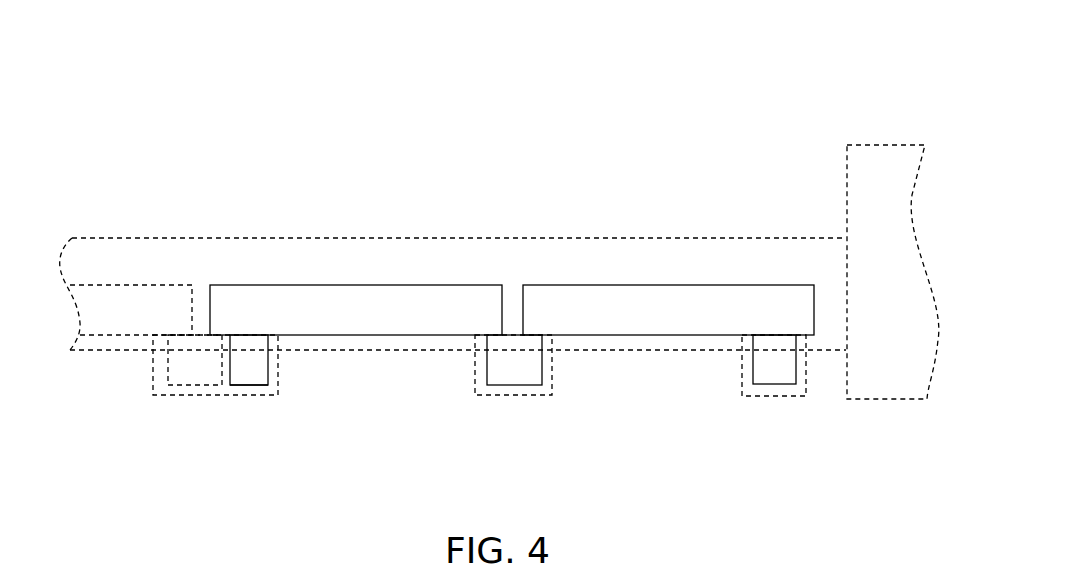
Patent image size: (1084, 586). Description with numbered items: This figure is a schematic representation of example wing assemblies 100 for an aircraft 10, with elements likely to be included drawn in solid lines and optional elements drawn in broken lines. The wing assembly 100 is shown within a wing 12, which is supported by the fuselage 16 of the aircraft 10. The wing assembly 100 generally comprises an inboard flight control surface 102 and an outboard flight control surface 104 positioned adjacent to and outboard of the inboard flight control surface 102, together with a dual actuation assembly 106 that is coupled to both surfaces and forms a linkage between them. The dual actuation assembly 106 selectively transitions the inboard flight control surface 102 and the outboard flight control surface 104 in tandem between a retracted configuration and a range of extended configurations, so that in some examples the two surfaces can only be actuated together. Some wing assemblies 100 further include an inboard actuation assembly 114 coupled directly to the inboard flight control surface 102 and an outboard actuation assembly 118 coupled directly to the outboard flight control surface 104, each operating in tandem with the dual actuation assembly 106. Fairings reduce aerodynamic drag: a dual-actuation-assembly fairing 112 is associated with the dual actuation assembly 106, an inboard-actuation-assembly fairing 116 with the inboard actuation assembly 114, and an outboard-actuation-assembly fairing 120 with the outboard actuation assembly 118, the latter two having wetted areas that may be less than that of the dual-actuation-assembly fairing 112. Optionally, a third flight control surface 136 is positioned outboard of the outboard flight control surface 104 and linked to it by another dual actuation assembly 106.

The aircraft 10 is at (871, 42).
The wing 12 is at (718, 239).
The fuselage 16 is at (888, 145).
The wing assembly 100 is at (575, 190).
The inboard flight control surface 102 is at (668, 285).
The outboard flight control surface 104 is at (355, 285).
The dual actuation assembly 106 is at (195, 396).
The dual-actuation-assembly fairing 112 is at (158, 397).
The inboard actuation assembly 114 is at (773, 385).
The inboard-actuation-assembly fairing 116 is at (767, 397).
The outboard actuation assembly 118 is at (250, 385).
The outboard-actuation-assembly fairing 120 is at (242, 390).
The third flight control surface 136 is at (137, 285).